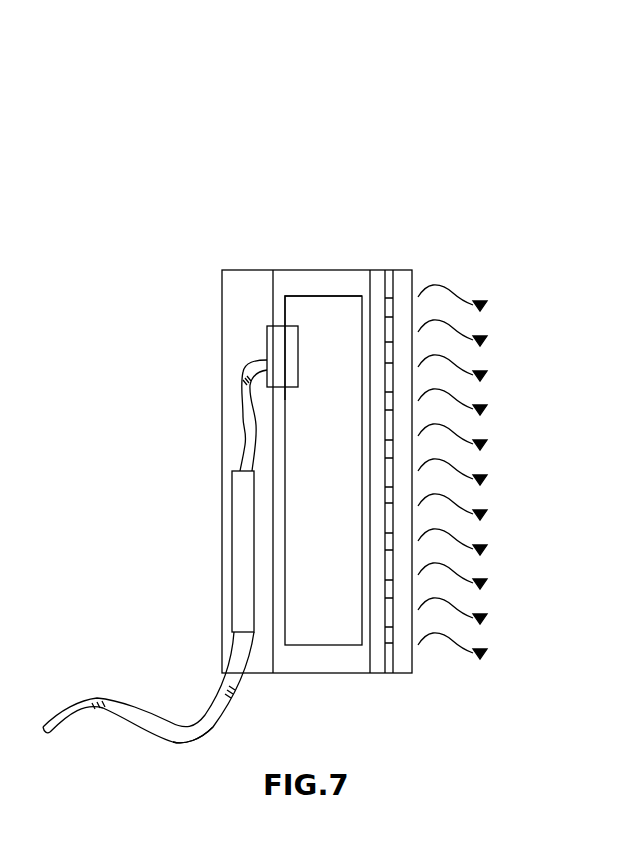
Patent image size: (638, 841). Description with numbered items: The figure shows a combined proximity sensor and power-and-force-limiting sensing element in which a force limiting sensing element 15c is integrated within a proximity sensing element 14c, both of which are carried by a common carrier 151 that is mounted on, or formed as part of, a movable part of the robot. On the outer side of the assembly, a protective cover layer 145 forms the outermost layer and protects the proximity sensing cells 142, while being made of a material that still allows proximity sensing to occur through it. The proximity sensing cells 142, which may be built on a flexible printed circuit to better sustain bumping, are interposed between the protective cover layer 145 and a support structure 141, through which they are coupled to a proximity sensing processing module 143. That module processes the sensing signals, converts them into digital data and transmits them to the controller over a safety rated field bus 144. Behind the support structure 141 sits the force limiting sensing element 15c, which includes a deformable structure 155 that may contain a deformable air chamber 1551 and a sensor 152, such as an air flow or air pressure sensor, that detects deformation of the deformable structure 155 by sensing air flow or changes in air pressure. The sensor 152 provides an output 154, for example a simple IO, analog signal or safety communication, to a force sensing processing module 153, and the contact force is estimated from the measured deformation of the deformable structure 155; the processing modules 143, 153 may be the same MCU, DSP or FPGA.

The force limiting sensing element 15c is at (221, 86).
The proximity sensing element 14c is at (441, 85).
The carrier 151 is at (237, 288).
The sensor 152 is at (280, 350).
The force sensing processing module 153 is at (248, 590).
The output 154 is at (240, 422).
The deformable structure 155 is at (318, 280).
The air chamber 1551 is at (302, 308).
The support structure 141 is at (377, 283).
The proximity sensing cells 142 is at (395, 290).
The proximity sensing processing module 143 is at (148, 645).
The safety rated field bus 144 is at (212, 730).
The protective cover layer 145 is at (413, 280).